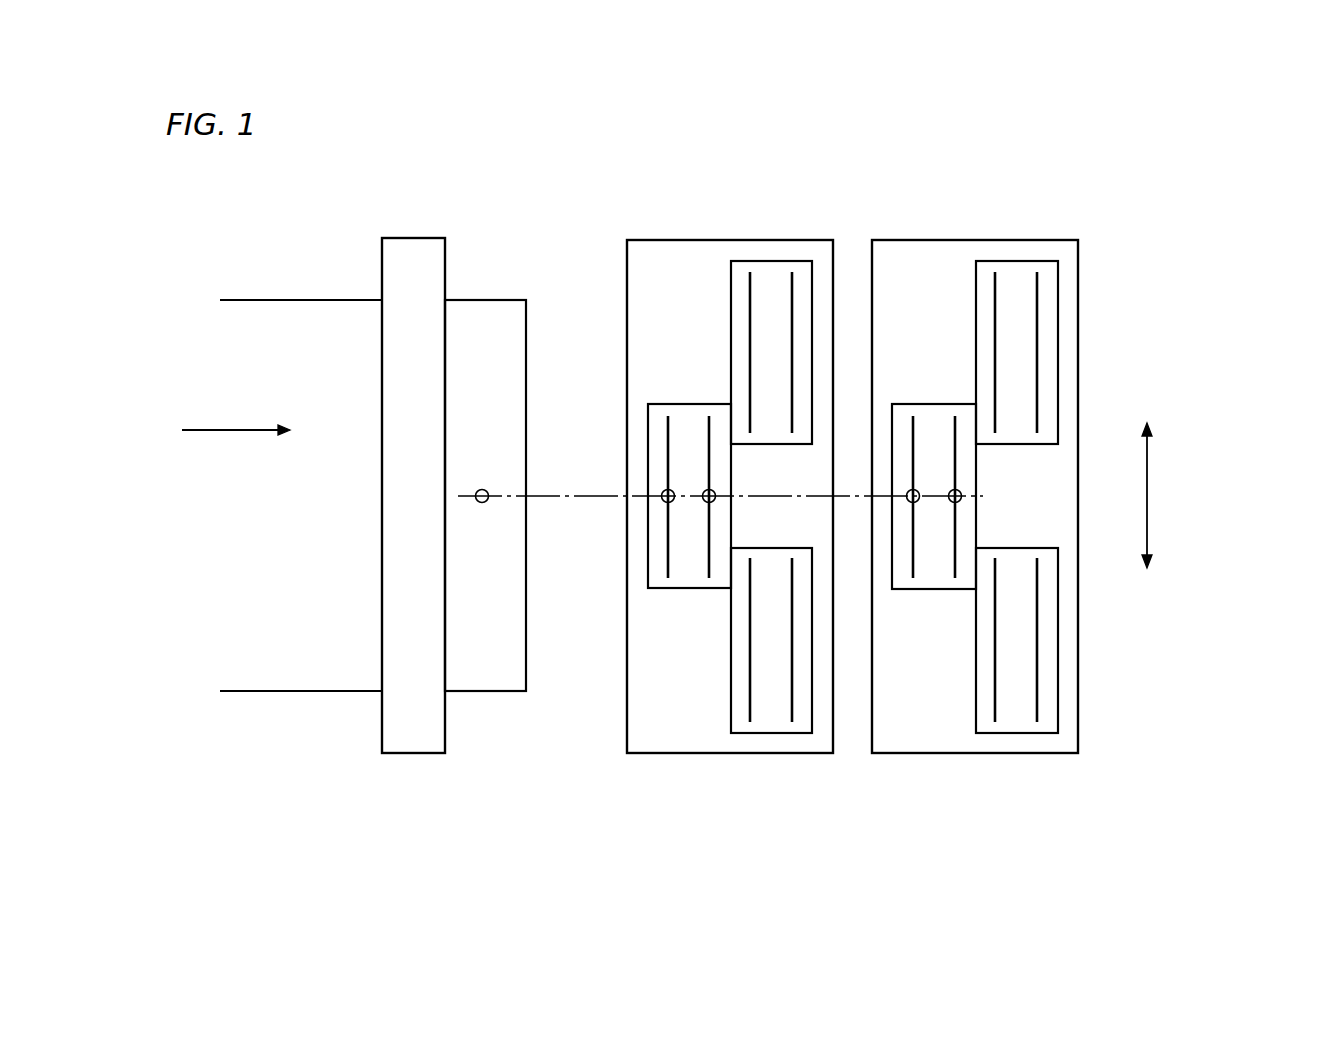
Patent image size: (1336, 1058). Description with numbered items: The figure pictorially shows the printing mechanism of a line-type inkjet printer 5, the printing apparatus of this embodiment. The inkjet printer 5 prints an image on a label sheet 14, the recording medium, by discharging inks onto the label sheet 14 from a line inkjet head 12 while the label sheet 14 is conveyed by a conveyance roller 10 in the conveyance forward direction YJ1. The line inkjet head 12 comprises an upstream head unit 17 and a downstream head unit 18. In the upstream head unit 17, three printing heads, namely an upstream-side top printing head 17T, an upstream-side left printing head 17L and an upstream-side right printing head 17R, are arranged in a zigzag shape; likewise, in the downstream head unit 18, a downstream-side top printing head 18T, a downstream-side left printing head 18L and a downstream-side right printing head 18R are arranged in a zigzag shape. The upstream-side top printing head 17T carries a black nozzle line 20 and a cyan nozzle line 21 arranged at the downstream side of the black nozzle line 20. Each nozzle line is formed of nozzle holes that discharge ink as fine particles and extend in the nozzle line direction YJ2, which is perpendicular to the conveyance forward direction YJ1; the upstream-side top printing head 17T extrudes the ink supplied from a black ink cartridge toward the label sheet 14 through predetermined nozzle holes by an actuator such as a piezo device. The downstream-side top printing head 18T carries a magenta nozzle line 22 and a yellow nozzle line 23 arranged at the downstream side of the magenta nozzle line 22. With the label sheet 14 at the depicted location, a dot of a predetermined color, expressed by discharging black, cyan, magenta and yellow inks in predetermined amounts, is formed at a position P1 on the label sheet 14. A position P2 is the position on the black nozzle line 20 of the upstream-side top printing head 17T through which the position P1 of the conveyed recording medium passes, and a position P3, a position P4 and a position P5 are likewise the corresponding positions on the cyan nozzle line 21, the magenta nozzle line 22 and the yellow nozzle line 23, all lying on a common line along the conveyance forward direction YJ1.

The inkjet printer 5 is at (518, 211).
The conveyance roller 10 is at (382, 268).
The line inkjet head 12 is at (878, 208).
The label sheet 14 is at (485, 300).
The upstream head unit 17 is at (798, 240).
The upstream-side left printing head 17L is at (743, 261).
The upstream-side top printing head 17T is at (694, 404).
The upstream-side right printing head 17R is at (766, 548).
The downstream head unit 18 is at (916, 240).
The downstream-side left printing head 18L is at (988, 261).
The downstream-side top printing head 18T is at (938, 404).
The downstream-side right printing head 18R is at (1013, 548).
The black nozzle line 20 is at (750, 415).
The cyan nozzle line 21 is at (792, 415).
The magenta nozzle line 22 is at (995, 415).
The yellow nozzle line 23 is at (1037, 415).
The position P1 is at (482, 489).
The position P2 is at (672, 490).
The position P3 is at (706, 503).
The position P4 is at (917, 490).
The position P5 is at (951, 503).
The conveyance forward direction YJ1 is at (238, 430).
The nozzle line direction YJ2 is at (1147, 552).